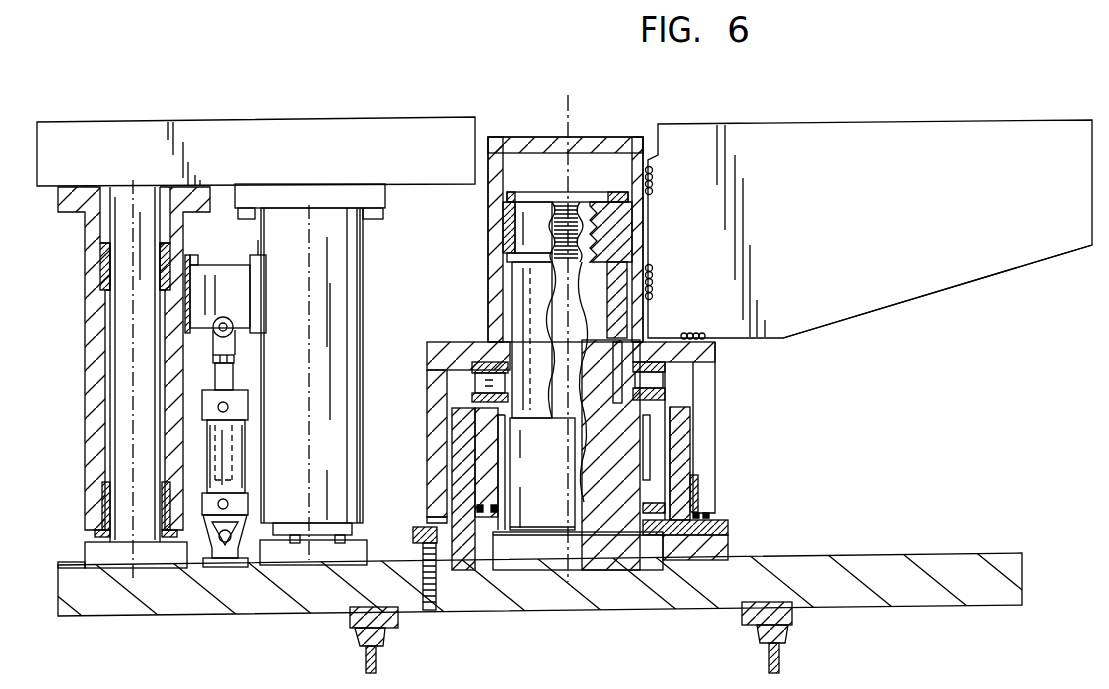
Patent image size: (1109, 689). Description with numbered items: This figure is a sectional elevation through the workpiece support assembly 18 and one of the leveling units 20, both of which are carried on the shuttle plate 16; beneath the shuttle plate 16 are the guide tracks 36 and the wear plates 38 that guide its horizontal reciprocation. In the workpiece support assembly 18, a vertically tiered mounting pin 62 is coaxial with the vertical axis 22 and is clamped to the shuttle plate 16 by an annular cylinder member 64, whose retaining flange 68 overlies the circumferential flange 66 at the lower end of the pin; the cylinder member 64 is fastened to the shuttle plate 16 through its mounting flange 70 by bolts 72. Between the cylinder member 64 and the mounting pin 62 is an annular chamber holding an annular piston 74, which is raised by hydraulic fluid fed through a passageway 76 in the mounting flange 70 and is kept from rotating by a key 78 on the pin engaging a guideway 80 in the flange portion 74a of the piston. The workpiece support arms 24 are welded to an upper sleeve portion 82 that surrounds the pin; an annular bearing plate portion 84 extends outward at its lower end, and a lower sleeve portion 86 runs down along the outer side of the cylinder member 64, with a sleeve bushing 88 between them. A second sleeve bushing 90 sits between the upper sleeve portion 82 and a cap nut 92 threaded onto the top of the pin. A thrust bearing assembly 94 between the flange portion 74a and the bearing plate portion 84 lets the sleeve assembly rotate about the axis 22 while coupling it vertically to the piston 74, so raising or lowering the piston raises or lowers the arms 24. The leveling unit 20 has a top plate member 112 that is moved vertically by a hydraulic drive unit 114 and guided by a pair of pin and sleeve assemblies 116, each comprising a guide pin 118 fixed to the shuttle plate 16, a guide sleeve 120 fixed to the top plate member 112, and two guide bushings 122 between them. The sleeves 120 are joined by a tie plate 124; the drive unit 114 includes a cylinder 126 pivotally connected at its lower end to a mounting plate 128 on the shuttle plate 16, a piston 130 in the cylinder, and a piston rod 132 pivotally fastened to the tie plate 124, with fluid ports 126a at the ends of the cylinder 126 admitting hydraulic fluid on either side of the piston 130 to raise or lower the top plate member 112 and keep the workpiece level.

The shuttle plate 16 is at (530, 591).
The workpiece support assembly 18 is at (869, 202).
The leveling unit 20 is at (213, 108).
The vertical axis 22 is at (570, 102).
The workpiece support arm 24 is at (945, 280).
The guide track 36 is at (376, 655).
The wear plate 38 is at (352, 622).
The mounting pin 62 is at (563, 473).
The cylinder member 64 is at (682, 455).
The circumferential flange 66 is at (645, 560).
The retaining flange 68 is at (470, 560).
The mounting flange 70 is at (728, 527).
The bolt 72 is at (433, 580).
The annular piston 74 is at (715, 462).
The flange portion of piston 74a is at (632, 464).
The passageway 76 is at (728, 536).
The key 78 is at (573, 350).
The key engaging guideway 80 is at (613, 395).
The upper sleeve portion 82 is at (601, 239).
The bearing plate portion 84 is at (690, 336).
The lower sleeve portion 86 is at (707, 400).
The sleeve bushing 88 is at (698, 490).
The sleeve bushing 90 is at (641, 210).
The cap nut 92 is at (610, 200).
The thrust bearing assembly 94 is at (468, 381).
The top plate member 112 is at (305, 135).
The hydraulic drive unit 114 is at (231, 416).
The pin and sleeve assembly 116 is at (80, 328).
The guide pin 118 is at (125, 445).
The guide sleeve 120 is at (90, 358).
The guide bushing 122 is at (102, 262).
The tie plate 124 is at (232, 280).
The cylinder 126 is at (246, 463).
The fluid port 126a is at (228, 407).
The mounting plate 128 is at (236, 560).
The piston 130 is at (250, 483).
The piston rod 132 is at (232, 373).